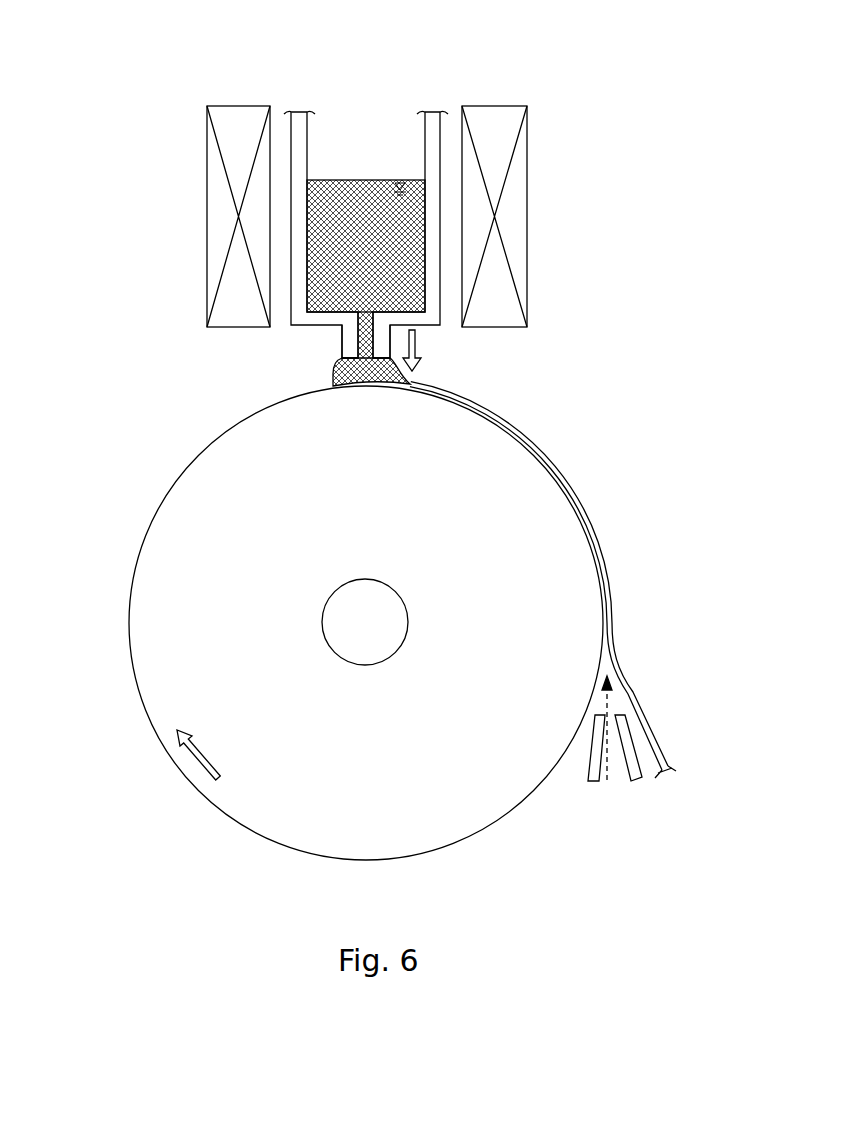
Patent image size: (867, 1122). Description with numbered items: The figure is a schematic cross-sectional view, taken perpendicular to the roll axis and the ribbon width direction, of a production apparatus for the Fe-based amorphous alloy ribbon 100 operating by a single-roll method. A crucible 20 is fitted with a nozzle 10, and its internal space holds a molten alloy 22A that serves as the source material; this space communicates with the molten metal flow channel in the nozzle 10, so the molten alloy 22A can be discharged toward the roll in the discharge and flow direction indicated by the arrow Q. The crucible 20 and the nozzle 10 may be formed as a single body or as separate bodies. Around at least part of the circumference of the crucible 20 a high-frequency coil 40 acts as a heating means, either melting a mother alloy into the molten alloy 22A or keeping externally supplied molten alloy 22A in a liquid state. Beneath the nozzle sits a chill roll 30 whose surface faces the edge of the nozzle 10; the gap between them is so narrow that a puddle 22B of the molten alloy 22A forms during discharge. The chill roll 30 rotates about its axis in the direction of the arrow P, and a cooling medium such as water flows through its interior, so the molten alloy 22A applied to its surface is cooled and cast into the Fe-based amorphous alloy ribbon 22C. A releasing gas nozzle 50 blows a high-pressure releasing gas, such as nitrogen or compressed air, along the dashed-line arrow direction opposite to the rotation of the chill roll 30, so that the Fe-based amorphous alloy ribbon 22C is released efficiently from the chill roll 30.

The nozzle 10 is at (347, 343).
The crucible 20 is at (428, 146).
The molten alloy 22A is at (352, 200).
The puddle 22B is at (333, 376).
The Fe-based amorphous alloy ribbon 22C is at (600, 550).
The chill roll 30 is at (146, 588).
The high-frequency coil 40 is at (218, 215).
The releasing gas nozzle 50 is at (589, 770).
The production apparatus for the Fe-based amorphous alloy ribbon 100 is at (672, 130).
The arrow P is at (200, 753).
The arrow Q is at (423, 349).